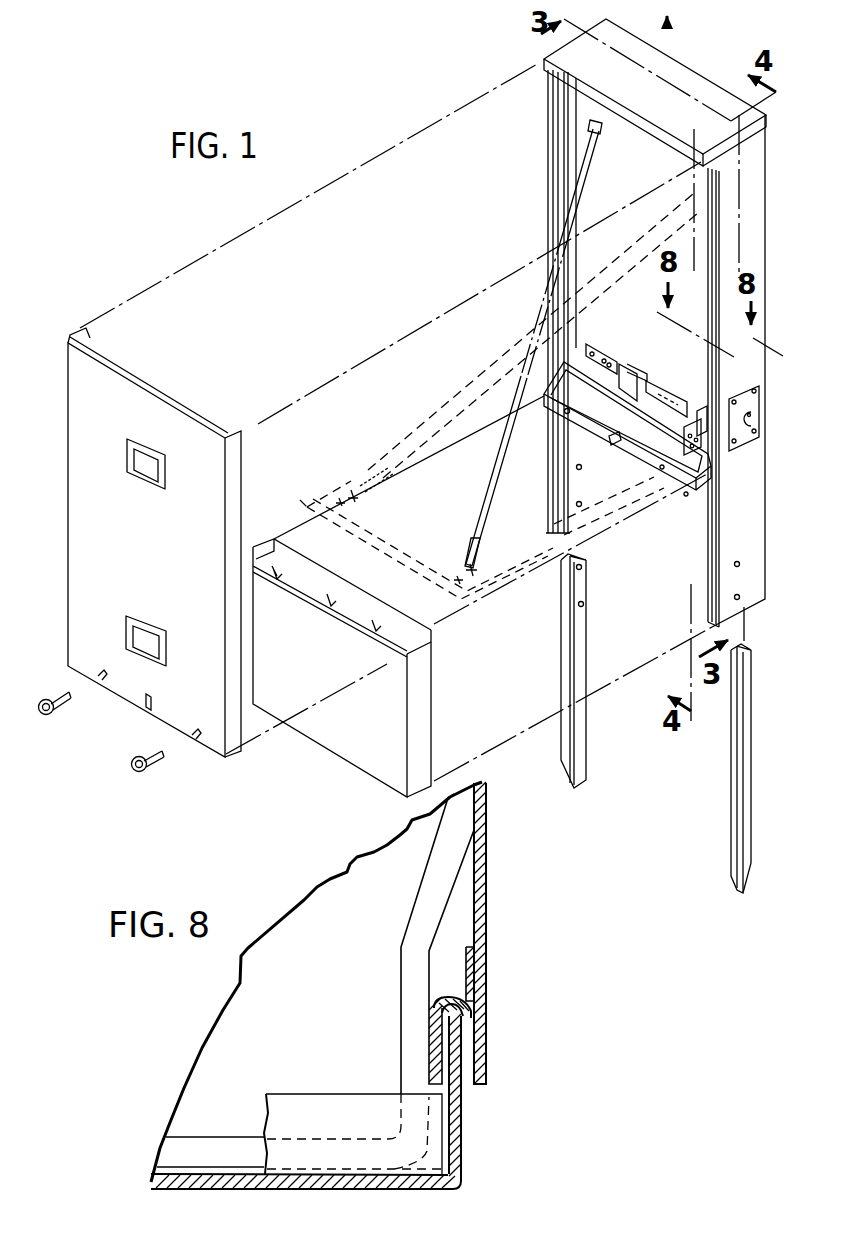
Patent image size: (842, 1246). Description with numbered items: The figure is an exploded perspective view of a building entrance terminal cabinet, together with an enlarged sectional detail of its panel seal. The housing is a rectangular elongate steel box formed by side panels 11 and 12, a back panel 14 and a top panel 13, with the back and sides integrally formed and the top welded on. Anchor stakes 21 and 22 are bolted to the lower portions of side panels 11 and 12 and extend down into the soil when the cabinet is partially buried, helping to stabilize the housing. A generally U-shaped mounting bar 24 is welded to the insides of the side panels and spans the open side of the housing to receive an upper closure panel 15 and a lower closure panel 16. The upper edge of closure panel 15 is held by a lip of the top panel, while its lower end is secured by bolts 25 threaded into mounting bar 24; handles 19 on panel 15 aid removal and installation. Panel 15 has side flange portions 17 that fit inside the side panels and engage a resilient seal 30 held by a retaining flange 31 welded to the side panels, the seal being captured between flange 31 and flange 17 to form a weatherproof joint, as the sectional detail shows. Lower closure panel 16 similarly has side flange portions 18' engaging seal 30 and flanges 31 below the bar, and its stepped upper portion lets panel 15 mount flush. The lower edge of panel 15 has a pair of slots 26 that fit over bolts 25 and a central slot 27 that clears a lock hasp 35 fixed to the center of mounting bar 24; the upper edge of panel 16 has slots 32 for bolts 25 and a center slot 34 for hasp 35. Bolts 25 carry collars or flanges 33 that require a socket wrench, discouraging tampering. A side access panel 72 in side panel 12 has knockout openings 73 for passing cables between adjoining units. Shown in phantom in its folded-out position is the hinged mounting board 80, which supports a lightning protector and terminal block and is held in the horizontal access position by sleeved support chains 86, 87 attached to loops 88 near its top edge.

In FIG. 1, the side panel 11 is at (544, 96).
In FIG. 1, the side panel 12 is at (751, 146).
In FIG. 1, the top panel 13 is at (663, 54).
In FIG. 1, the back panel 14 is at (646, 523).
In FIG. 1, the upper closure panel 15 is at (62, 537).
In FIG. 8, the upper closure panel 15 is at (223, 1169).
In FIG. 1, the lower closure panel 16 is at (338, 734).
In FIG. 1, the side flange portion 17 is at (73, 328).
In FIG. 8, the side flange portion 17 is at (453, 1128).
In FIG. 1, the side flange portion 18' is at (436, 713).
In FIG. 1, the handle 19 is at (120, 459).
In FIG. 1, the anchor stake 21 is at (556, 674).
In FIG. 1, the anchor stake 22 is at (726, 798).
In FIG. 1, the mounting bar 24 is at (681, 478).
In FIG. 1, the bolt 25 is at (56, 693).
In FIG. 1, the slot 26 is at (101, 665).
In FIG. 1, the central slot 27 is at (143, 690).
In FIG. 8, the resilient seal 30 is at (458, 1030).
In FIG. 8, the retaining flange 31 is at (458, 953).
In FIG. 1, the slot 32 is at (270, 564).
In FIG. 1, the collar or flange 33 is at (37, 708).
In FIG. 1, the center slot 34 is at (324, 591).
In FIG. 1, the lock hasp 35 is at (608, 438).
In FIG. 1, the side access panel 72 is at (734, 386).
In FIG. 1, the knockout opening 73 is at (739, 420).
In FIG. 1, the mounting board 80 is at (386, 560).
In FIG. 1, the panel support chain 86 is at (447, 389).
In FIG. 1, the panel support chain 87 is at (533, 326).
In FIG. 1, the loop 88 is at (345, 488).